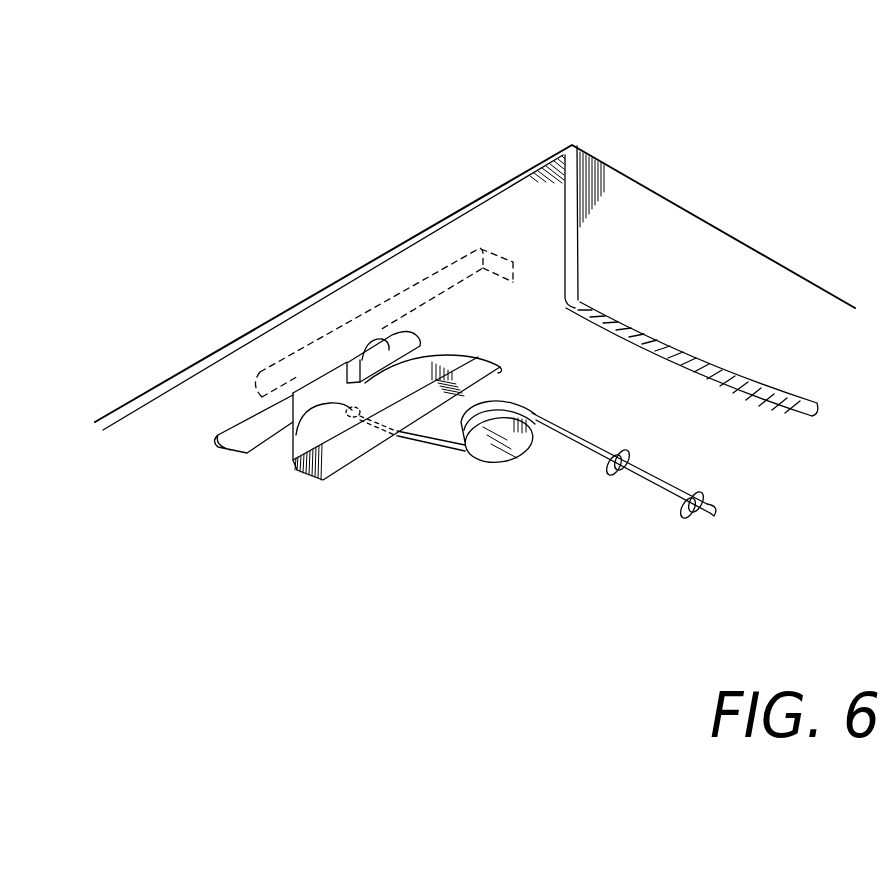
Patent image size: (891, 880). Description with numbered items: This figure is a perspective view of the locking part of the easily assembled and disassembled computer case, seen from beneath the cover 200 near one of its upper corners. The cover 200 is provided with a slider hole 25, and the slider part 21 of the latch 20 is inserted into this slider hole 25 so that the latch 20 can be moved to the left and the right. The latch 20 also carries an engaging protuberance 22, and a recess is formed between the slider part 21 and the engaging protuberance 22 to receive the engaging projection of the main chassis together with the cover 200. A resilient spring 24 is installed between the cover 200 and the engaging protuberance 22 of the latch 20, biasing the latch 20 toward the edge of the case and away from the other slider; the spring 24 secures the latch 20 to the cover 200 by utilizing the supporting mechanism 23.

The cover 200 is at (615, 217).
The latch 20 is at (320, 480).
The slider part 21 is at (418, 282).
The engaging protuberance 22 is at (460, 357).
The supporting mechanism 23 is at (290, 447).
The resilient spring 24 is at (560, 430).
The slider hole 25 is at (365, 352).